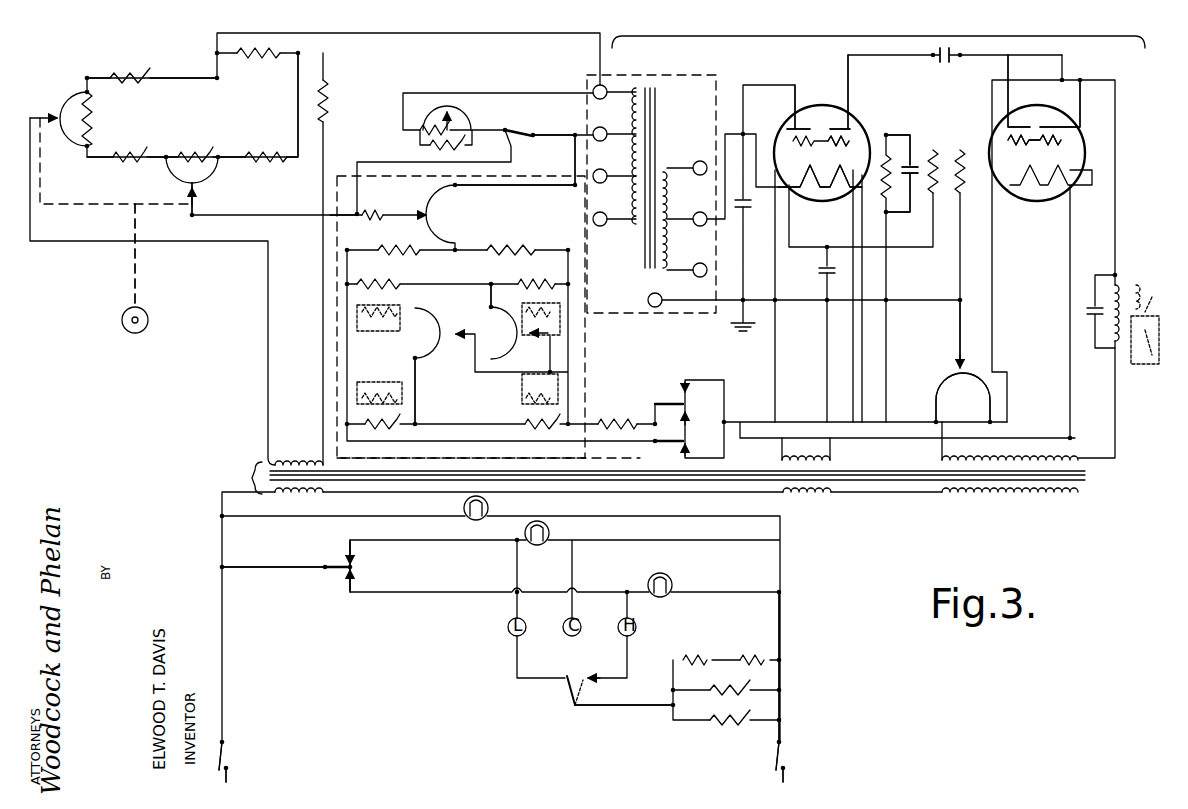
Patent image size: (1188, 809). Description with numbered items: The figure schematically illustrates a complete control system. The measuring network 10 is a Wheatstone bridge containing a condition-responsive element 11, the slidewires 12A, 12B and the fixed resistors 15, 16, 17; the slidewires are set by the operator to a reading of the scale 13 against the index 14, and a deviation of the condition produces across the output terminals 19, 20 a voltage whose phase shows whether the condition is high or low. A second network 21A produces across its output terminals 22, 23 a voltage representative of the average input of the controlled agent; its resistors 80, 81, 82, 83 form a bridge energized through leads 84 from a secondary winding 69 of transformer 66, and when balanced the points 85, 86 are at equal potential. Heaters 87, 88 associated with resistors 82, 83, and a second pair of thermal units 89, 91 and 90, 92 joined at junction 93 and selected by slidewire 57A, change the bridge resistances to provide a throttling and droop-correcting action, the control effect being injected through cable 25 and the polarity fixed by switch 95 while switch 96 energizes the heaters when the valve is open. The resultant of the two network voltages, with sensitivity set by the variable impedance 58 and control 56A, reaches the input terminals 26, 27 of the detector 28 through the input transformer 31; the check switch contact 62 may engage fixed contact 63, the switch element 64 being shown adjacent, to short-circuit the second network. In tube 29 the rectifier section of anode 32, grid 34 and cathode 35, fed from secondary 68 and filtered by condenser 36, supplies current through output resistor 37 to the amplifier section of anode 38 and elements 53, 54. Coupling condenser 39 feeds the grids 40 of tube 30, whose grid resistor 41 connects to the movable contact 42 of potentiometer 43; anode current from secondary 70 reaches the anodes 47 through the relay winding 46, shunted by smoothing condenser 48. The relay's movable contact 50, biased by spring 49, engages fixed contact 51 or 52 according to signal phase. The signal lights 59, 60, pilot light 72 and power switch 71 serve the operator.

The network 10 is at (192, 105).
The element 11 is at (262, 60).
The slidewire 12A is at (68, 95).
The slidewire 12B is at (172, 178).
The scale 13 is at (147, 333).
The index 14 is at (122, 314).
The fixed resistor 15 is at (125, 75).
The fixed resistor 16 is at (130, 155).
The fixed resistor 17 is at (266, 152).
The output terminal 19 is at (215, 54).
The output terminal 20 is at (198, 192).
The second network 21A is at (461, 317).
The output terminal 22 is at (364, 210).
The output terminal 23 is at (572, 188).
The cable 25 is at (628, 718).
The input terminal 26 is at (594, 88).
The input terminal 27 is at (609, 123).
The detector 28 is at (858, 35).
The tube 29 is at (778, 118).
The tube 30 is at (1034, 201).
The input transformer 31 is at (651, 194).
The anode 32 is at (800, 100).
The grid 34 is at (820, 195).
The cathode 35 is at (778, 190).
The filter condenser 36 is at (818, 272).
The output resistor 37 is at (933, 196).
The anode 38 is at (846, 110).
The coupling condenser 39 is at (948, 48).
The grids 40 is at (1065, 148).
The grid resistor 41 is at (962, 194).
The movable contact 42 is at (956, 350).
The potentiometer 43 is at (963, 397).
The relay winding 46 is at (1112, 345).
The anodes 47 is at (1020, 112).
The smoothing condenser 48 is at (1090, 320).
The spring 49 is at (1136, 284).
The movable contact 50 is at (352, 568).
The fixed contact 51 is at (322, 546).
The fixed contact 52 is at (322, 592).
The amplifier section element 53 is at (848, 138).
The amplifier section element 54 is at (882, 140).
The control 56A is at (452, 217).
The slidewire 57A is at (520, 332).
The variable impedance 58 is at (465, 112).
The signal light 59 is at (672, 580).
The signal light 60 is at (549, 532).
The contact 62 is at (516, 138).
The fixed contact 63 is at (508, 144).
The switch 64 is at (510, 128).
The transformer 66 is at (273, 476).
The secondary 68 is at (826, 458).
The secondary winding 69 is at (940, 458).
The secondary 70 is at (1066, 455).
The power switch 71 is at (228, 762).
The pilot light 72 is at (488, 508).
The resistor 80 is at (406, 240).
The resistor 81 is at (533, 240).
The resistor 82 is at (384, 274).
The resistor 83 is at (535, 282).
The leads 84 is at (777, 434).
The point 85 is at (456, 248).
The point 86 is at (492, 282).
The heater 87 is at (386, 314).
The heater 88 is at (712, 686).
The resistor 89 is at (400, 430).
The resistor 90 is at (540, 430).
The heater 91 is at (392, 392).
The heater 92 is at (710, 733).
The junction 93 is at (418, 423).
The switch 95 is at (664, 393).
The switch 96 is at (566, 692).